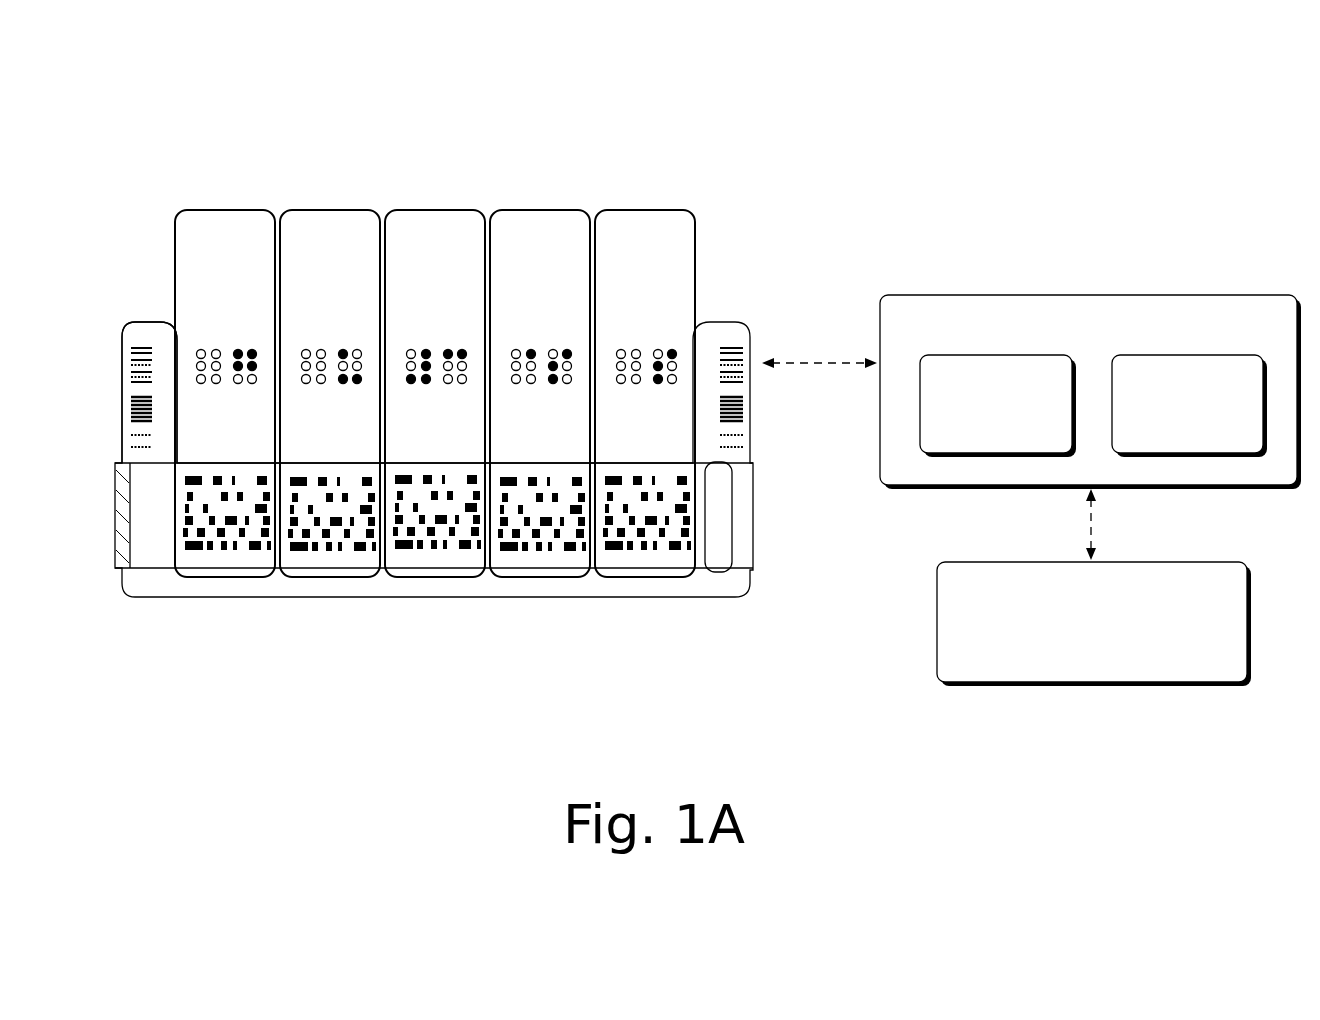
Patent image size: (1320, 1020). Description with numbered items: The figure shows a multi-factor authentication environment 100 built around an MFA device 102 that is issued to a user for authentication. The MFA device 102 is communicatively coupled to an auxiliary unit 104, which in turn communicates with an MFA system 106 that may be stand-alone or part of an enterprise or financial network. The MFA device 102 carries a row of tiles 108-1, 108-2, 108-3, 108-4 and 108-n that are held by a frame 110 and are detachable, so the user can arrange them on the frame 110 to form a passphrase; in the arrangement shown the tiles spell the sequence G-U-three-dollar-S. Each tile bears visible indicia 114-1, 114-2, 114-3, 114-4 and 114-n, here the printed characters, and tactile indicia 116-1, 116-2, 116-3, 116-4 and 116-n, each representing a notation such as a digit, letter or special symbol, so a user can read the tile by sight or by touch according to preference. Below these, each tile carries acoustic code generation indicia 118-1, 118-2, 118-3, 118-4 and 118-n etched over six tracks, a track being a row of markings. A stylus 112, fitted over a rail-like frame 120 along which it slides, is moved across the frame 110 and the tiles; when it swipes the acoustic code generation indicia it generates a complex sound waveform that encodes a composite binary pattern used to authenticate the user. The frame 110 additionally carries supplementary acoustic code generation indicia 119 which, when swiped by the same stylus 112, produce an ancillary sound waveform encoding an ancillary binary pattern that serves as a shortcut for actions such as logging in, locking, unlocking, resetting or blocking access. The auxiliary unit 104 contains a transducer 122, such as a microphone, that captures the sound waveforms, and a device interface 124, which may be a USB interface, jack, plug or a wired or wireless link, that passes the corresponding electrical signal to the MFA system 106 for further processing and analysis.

The multi-factor authentication environment 100 is at (784, 118).
The MFA device 102 is at (407, 695).
The auxiliary unit 104 is at (1031, 427).
The MFA system 106 is at (1094, 624).
The tile 108-1 is at (190, 212).
The tile 108-2 is at (327, 212).
The tile 108-3 is at (432, 212).
The tile 108-4 is at (503, 212).
The tile 108-n is at (648, 212).
The frame 110 is at (126, 334).
The stylus 112 is at (718, 488).
The visible indicia 114-1 is at (245, 220).
The visible indicia 114-2 is at (350, 218).
The visible indicia 114-3 is at (468, 225).
The visible indicia 114-4 is at (570, 228).
The visible indicia 114-n is at (680, 232).
The tactile indicia 116-1 is at (212, 360).
The tactile indicia 116-2 is at (312, 360).
The tactile indicia 116-3 is at (458, 352).
The tactile indicia 116-4 is at (570, 352).
The tactile indicia 116-n is at (655, 362).
The acoustic code generation indicia 118-1 is at (237, 558).
The acoustic code generation indicia 118-2 is at (348, 558).
The acoustic code generation indicia 118-3 is at (455, 558).
The acoustic code generation indicia 118-4 is at (560, 558).
The acoustic code generation indicia 118-n is at (672, 558).
The supplementary acoustic code generation indicia 119 is at (133, 406).
The rail-like frame 120 is at (745, 562).
The transducer 122 is at (998, 406).
The device interface 124 is at (1189, 406).